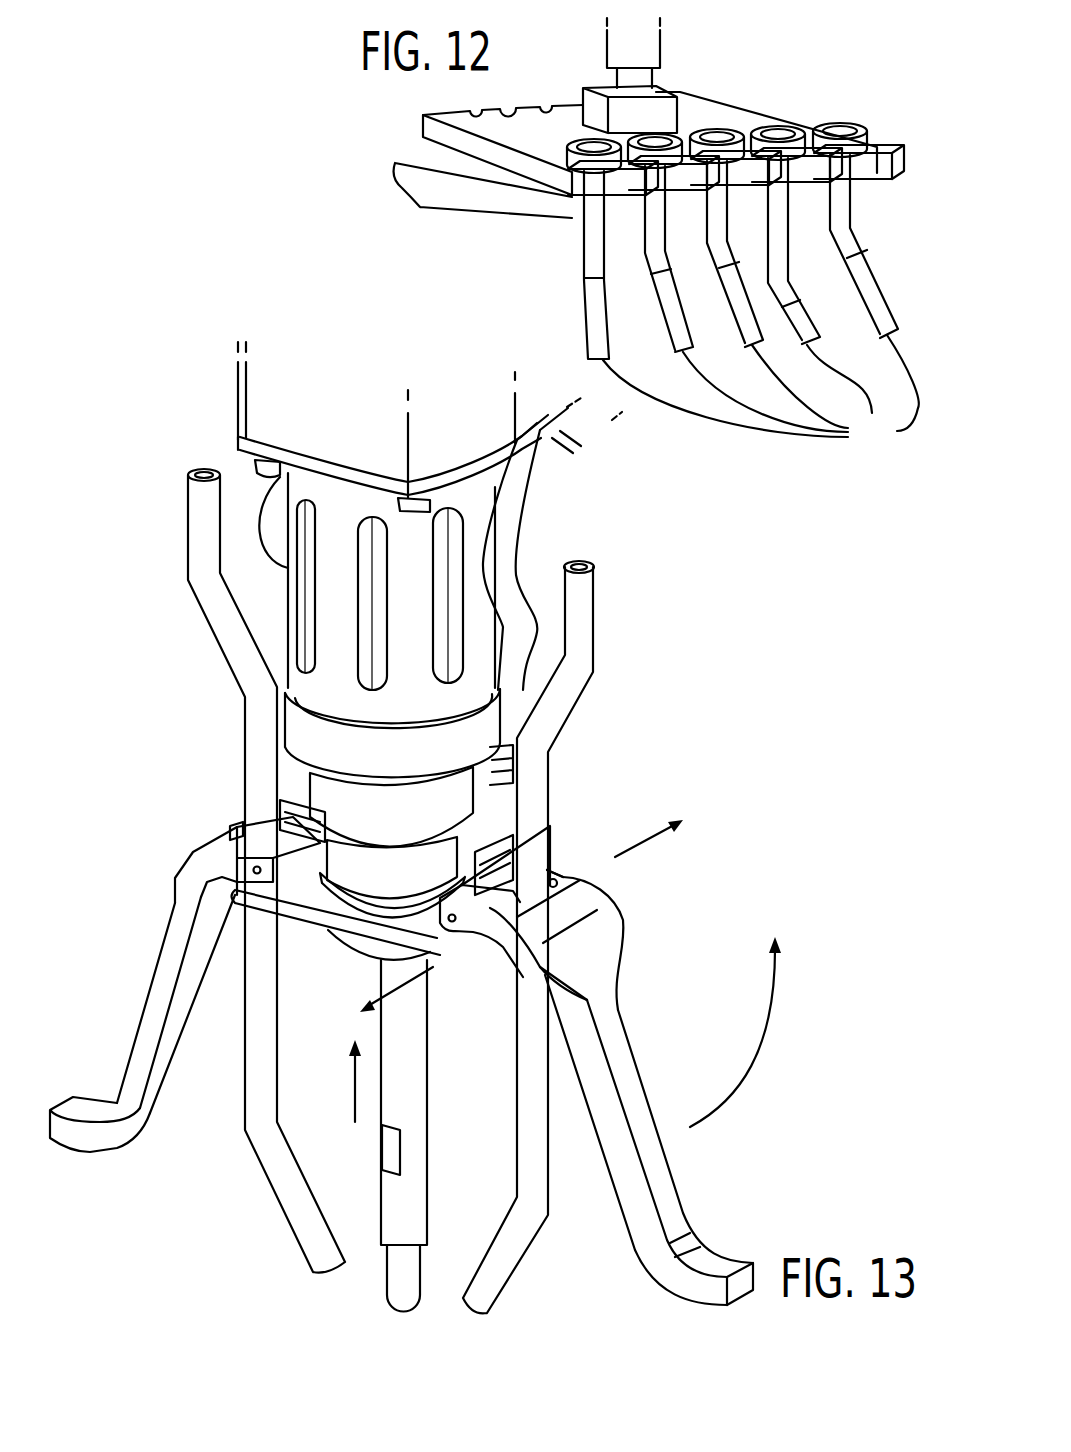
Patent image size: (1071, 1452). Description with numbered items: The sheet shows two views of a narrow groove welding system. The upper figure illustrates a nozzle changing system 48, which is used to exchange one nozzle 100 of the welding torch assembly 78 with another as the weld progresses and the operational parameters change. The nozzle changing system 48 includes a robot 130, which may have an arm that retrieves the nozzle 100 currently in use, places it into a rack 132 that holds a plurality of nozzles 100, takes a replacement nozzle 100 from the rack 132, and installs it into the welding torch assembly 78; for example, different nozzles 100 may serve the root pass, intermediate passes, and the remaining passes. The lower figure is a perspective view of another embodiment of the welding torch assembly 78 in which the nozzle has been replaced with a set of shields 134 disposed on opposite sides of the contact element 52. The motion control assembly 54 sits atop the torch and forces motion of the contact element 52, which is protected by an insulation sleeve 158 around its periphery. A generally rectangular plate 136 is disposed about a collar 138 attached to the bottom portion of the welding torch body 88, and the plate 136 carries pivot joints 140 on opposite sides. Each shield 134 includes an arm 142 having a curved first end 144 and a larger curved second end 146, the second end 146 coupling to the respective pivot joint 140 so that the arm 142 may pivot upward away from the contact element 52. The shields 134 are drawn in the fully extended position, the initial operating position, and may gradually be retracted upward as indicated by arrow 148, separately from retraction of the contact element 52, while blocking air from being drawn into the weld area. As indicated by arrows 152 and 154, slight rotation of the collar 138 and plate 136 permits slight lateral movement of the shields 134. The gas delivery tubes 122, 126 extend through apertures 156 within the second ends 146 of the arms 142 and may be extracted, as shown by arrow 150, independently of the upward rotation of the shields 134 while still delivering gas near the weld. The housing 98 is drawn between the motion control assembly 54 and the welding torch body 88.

In FIG. 12, the nozzle changing system 48 is at (847, 74).
In FIG. 12, the robot 130 is at (607, 46).
In FIG. 12, the rack 132 is at (893, 143).
In FIG. 12, the nozzle 100 is at (761, 392).
In FIG. 13, the motion control assembly 54 is at (262, 407).
In FIG. 13, the housing 98 is at (330, 613).
In FIG. 13, the welding torch body 88 is at (407, 881).
In FIG. 13, the gas delivery tube 126 is at (230, 630).
In FIG. 13, the gas delivery tube 122 is at (580, 617).
In FIG. 13, the welding torch assembly 78 is at (757, 621).
In FIG. 13, the pivot joint 140 is at (287, 785).
In FIG. 13, the aperture 156 is at (244, 832).
In FIG. 13, the second end 146 is at (192, 862).
In FIG. 13, the arm 142 is at (150, 1008).
In FIG. 13, the first end 144 is at (100, 1108).
In FIG. 13, the plate 136 is at (313, 920).
In FIG. 13, the collar 138 is at (425, 910).
In FIG. 13, the insulation sleeve 158 is at (413, 1095).
In FIG. 13, the contact element 52 is at (410, 1272).
In FIG. 13, the arrow 150 is at (355, 1087).
In FIG. 13, the arrow 152 is at (410, 977).
In FIG. 13, the arrow 154 is at (645, 845).
In FIG. 13, the arrow 148 is at (757, 1036).
In FIG. 13, the shield 134 is at (132, 951).